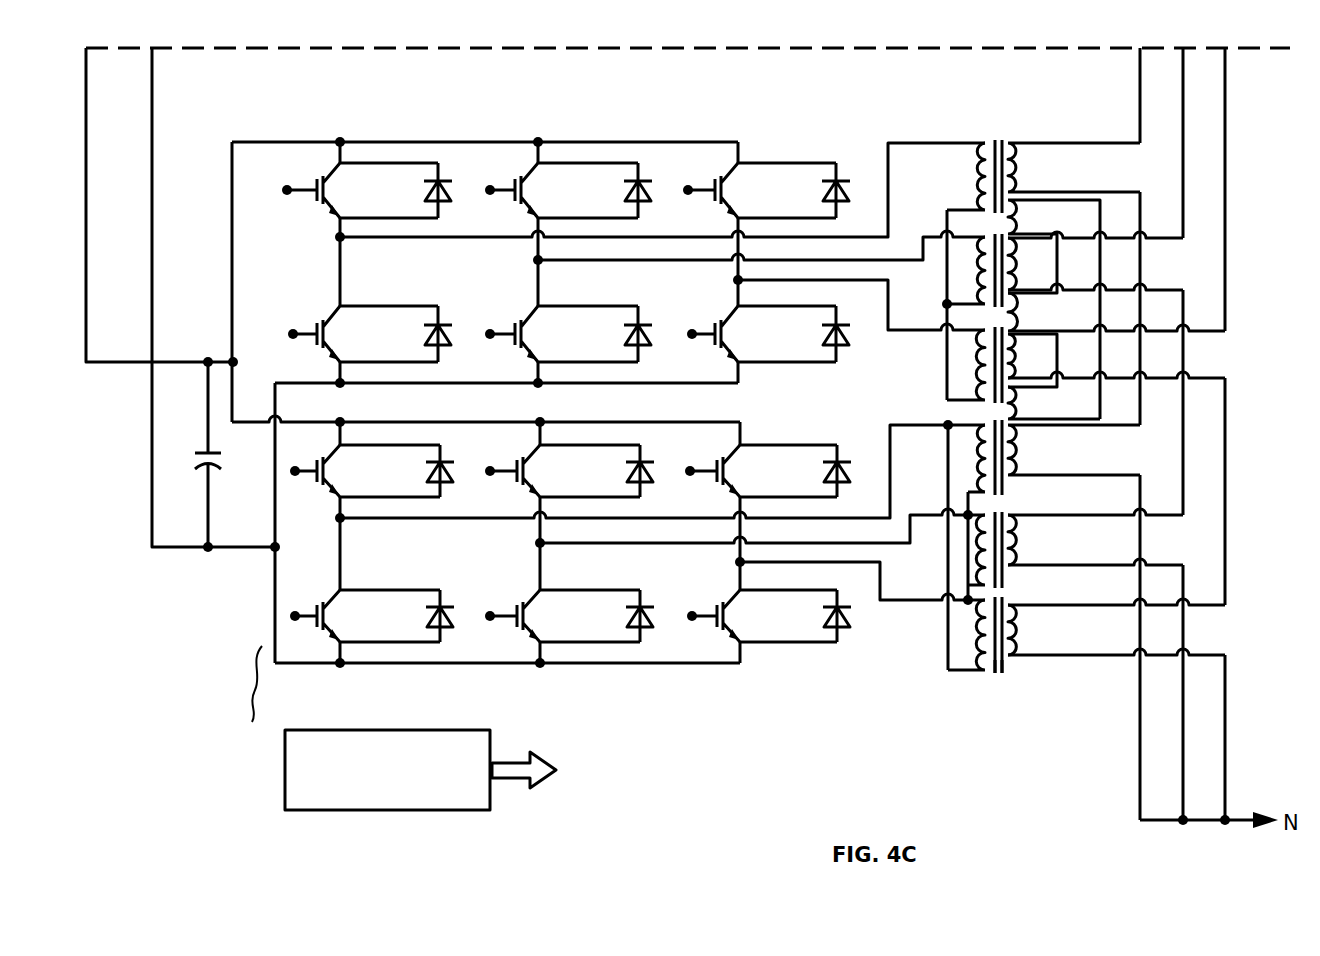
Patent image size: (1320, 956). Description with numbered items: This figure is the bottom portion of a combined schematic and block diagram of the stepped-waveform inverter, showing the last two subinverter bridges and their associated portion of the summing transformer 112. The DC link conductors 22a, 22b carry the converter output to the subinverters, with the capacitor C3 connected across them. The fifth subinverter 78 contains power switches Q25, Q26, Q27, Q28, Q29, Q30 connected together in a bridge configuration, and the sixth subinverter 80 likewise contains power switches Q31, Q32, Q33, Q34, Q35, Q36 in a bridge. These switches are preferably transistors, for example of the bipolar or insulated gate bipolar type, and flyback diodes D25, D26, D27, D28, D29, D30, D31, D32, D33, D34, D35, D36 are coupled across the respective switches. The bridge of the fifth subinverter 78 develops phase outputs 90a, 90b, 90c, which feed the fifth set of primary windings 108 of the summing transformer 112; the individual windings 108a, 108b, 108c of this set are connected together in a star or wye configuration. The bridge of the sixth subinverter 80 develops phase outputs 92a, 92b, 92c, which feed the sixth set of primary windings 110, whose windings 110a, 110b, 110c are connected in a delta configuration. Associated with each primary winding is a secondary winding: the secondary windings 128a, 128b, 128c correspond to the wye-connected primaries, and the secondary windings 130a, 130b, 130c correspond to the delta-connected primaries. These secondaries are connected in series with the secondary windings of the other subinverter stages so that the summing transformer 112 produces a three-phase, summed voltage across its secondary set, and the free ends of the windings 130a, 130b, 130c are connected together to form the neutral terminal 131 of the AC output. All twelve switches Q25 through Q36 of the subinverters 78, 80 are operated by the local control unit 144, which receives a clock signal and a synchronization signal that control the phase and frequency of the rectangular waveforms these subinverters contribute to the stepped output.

The DC link conductor 22a is at (208, 360).
The DC link conductor 22b is at (186, 549).
The capacitor C3 is at (210, 470).
The fifth subinverter 78 is at (610, 393).
The sixth subinverter 80 is at (392, 412).
The power switch Q25 is at (326, 170).
The power switch Q26 is at (328, 310).
The power switch Q27 is at (524, 168).
The power switch Q28 is at (526, 312).
The power switch Q29 is at (724, 168).
The power switch Q30 is at (720, 327).
The power switch Q31 is at (326, 458).
The power switch Q32 is at (328, 607).
The power switch Q33 is at (525, 443).
The power switch Q34 is at (528, 607).
The power switch Q35 is at (722, 443).
The power switch Q36 is at (722, 600).
The flyback diode D25 is at (445, 178).
The flyback diode D26 is at (446, 325).
The flyback diode D27 is at (642, 178).
The flyback diode D28 is at (642, 325).
The flyback diode D29 is at (843, 180).
The flyback diode D30 is at (840, 340).
The flyback diode D31 is at (440, 443).
The flyback diode D32 is at (438, 605).
The flyback diode D33 is at (648, 463).
The flyback diode D34 is at (640, 628).
The flyback diode D35 is at (840, 452).
The flyback diode D36 is at (840, 645).
The phase output 90a is at (335, 240).
The phase output 90b is at (535, 263).
The phase output 90c is at (735, 283).
The phase output 92a is at (342, 522).
The phase output 92b is at (536, 543).
The phase output 92c is at (736, 562).
The fifth set of primary windings 108 is at (928, 338).
The primary winding 108a is at (977, 172).
The primary winding 108b is at (977, 287).
The primary winding 108c is at (977, 372).
The sixth set of primary windings 110 is at (908, 418).
The primary winding 110a is at (977, 448).
The primary winding 110b is at (977, 548).
The primary winding 110c is at (977, 648).
The summing transformer 112 is at (1003, 691).
The secondary winding 128a is at (1020, 173).
The secondary winding 128b is at (1020, 266).
The secondary winding 128c is at (1020, 362).
The secondary winding 130a is at (1020, 451).
The secondary winding 130b is at (1020, 546).
The secondary winding 130c is at (1020, 640).
The neutral terminal 131 is at (1245, 824).
The local control unit 144 is at (285, 773).